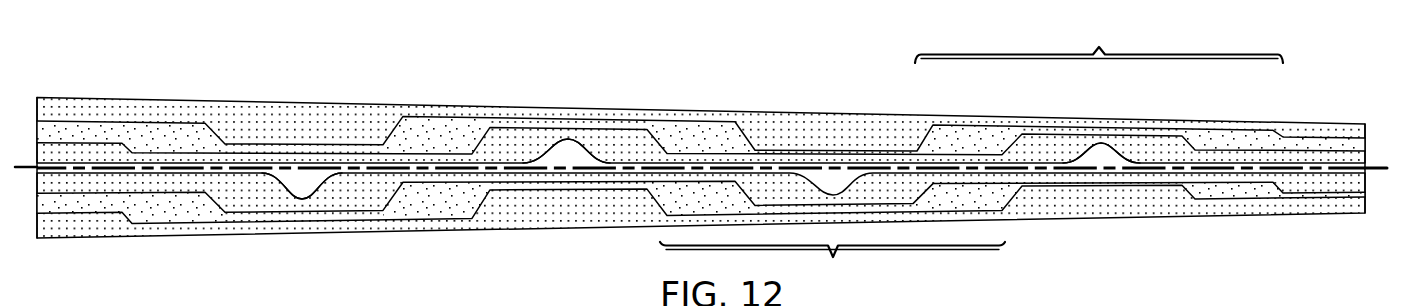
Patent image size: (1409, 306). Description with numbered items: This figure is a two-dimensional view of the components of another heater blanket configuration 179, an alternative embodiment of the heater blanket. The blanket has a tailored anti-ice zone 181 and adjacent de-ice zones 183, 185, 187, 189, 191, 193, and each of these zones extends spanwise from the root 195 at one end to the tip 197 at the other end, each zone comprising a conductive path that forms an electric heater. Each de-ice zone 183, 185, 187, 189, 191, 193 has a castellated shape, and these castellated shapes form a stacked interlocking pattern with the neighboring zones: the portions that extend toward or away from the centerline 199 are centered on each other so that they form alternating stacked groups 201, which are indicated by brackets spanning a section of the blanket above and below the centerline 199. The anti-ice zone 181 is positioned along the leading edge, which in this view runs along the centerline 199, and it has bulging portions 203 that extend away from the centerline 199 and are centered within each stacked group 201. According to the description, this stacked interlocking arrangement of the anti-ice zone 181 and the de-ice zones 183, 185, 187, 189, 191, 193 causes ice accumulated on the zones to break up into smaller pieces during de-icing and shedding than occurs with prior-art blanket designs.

The heater blanket configuration 179 is at (701, 162).
The anti-ice zone 181 is at (576, 157).
The de-ice zone 183 is at (557, 217).
The de-ice zone 185 is at (430, 207).
The de-ice zone 187 is at (358, 200).
The de-ice zone 189 is at (315, 116).
The de-ice zone 191 is at (442, 128).
The de-ice zone 193 is at (522, 145).
The root 195 is at (36, 229).
The tip 197 is at (1367, 196).
The centerline 199 is at (1088, 168).
The stacked group 201 is at (971, 154).
The bulging portion 203 is at (296, 190).